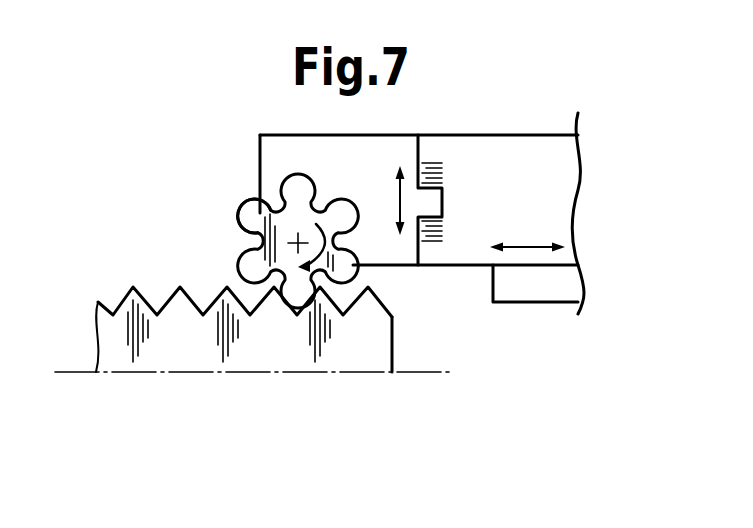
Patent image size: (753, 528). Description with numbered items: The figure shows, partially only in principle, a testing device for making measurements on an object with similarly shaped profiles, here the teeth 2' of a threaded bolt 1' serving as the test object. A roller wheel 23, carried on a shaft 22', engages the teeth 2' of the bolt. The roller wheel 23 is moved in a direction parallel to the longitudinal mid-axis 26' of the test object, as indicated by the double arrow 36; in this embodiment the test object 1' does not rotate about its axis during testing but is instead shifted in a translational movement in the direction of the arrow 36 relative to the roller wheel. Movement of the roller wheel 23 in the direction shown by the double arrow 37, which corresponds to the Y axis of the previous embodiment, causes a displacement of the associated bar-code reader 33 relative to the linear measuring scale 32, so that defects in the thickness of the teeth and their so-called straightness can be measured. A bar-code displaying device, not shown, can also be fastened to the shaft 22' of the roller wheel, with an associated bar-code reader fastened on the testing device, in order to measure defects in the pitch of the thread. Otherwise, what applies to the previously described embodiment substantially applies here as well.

The threaded bolt 1' is at (243, 381).
The teeth 2' is at (245, 267).
The shaft 22' is at (226, 241).
The roller wheel 23 is at (263, 222).
The longitudinal mid-axis 26' is at (252, 417).
The linear measuring scale 32 is at (432, 177).
The bar-code reader 33 is at (432, 207).
The double arrow 36 is at (528, 245).
The double arrow 37 is at (398, 202).